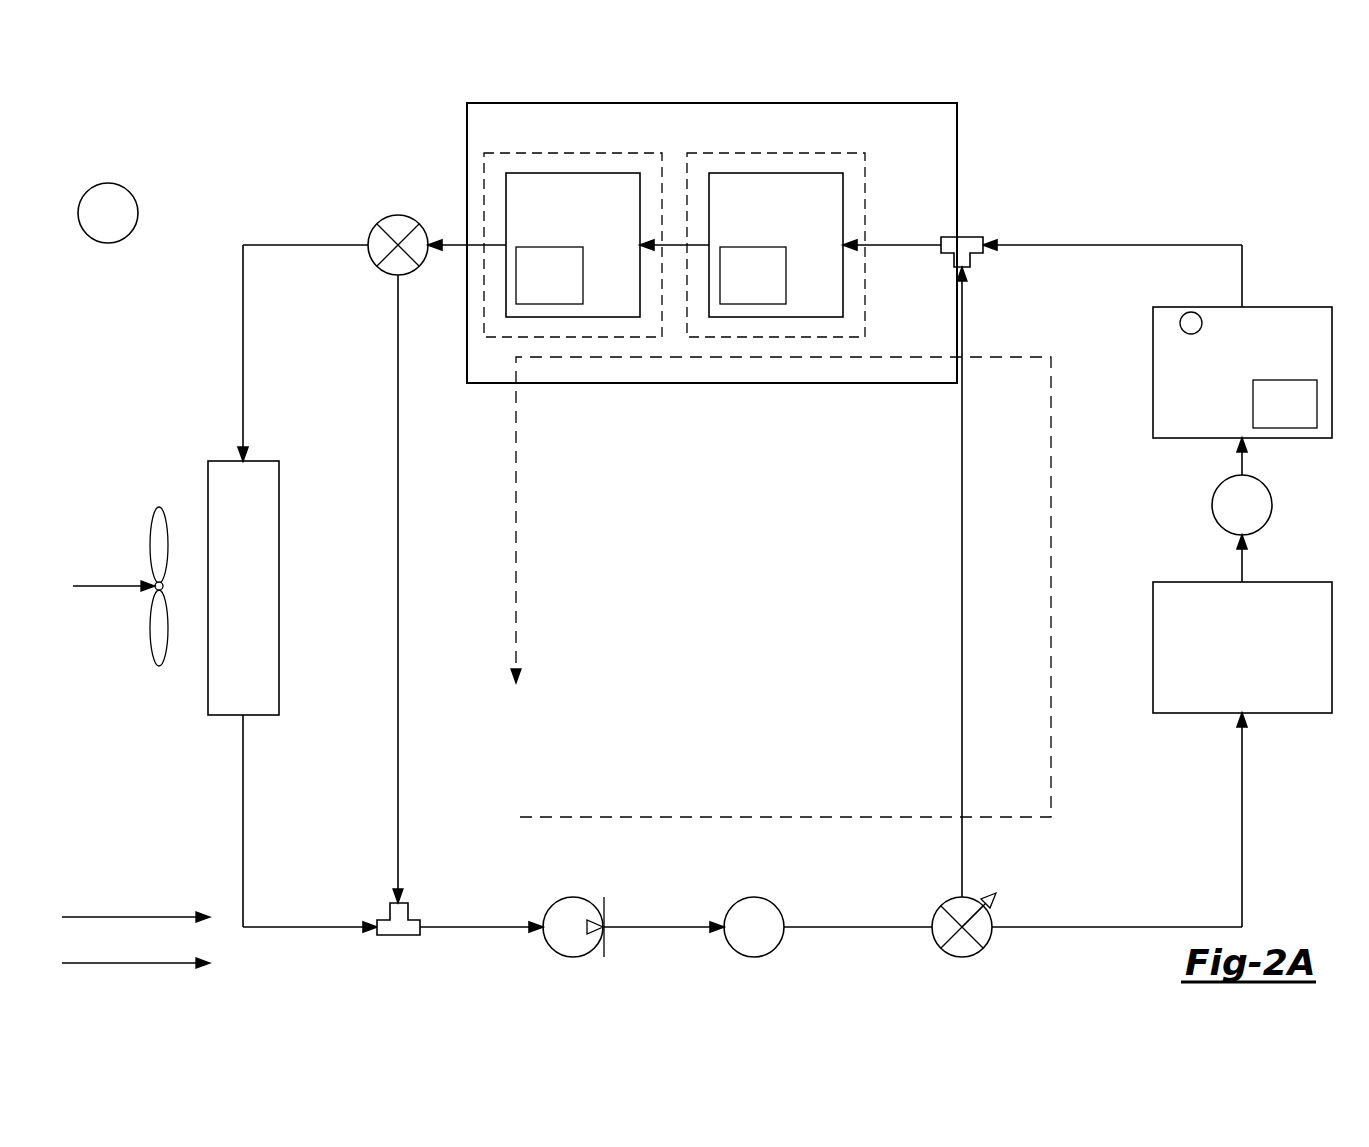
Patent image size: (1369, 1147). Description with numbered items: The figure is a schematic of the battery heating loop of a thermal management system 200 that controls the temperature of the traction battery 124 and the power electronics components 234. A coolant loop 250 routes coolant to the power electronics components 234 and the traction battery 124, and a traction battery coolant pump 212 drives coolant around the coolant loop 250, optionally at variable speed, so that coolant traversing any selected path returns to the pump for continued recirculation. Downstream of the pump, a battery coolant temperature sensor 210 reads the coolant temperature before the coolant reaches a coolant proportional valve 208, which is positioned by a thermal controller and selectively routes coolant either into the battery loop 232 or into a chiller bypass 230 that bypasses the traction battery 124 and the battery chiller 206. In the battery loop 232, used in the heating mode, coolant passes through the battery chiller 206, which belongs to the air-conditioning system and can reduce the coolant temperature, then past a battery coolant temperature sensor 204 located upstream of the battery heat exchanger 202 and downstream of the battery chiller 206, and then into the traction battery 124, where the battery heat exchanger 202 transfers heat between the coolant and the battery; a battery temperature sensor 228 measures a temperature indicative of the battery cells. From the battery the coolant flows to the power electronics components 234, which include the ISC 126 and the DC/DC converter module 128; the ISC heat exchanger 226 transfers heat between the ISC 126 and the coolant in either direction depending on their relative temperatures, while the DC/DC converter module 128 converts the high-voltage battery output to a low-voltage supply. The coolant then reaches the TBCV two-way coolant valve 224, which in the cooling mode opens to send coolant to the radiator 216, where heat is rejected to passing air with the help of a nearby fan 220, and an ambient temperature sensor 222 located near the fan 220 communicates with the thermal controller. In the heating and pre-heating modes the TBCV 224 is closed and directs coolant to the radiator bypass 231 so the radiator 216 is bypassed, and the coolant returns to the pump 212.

The thermal management system 200 is at (1262, 115).
The coolant loop 250 is at (243, 113).
The power electronics components 234 is at (957, 148).
The ISC 126 is at (572, 173).
The ISC heat exchanger 226 is at (516, 278).
The DC/DC converter module 128 is at (800, 173).
The battery temperature sensor 228 is at (786, 260).
The ambient temperature sensor 222 is at (137, 207).
The TBCV two-way coolant valve 224 is at (373, 232).
The radiator 216 is at (279, 502).
The fan 220 is at (157, 510).
The radiator bypass 231 is at (399, 772).
The chiller bypass 230 is at (962, 455).
The battery loop 232 is at (518, 524).
The traction battery 124 is at (1153, 370).
The battery heat exchanger 202 is at (1253, 407).
The battery coolant temperature sensor 204 is at (1268, 489).
The battery chiller 206 is at (1153, 612).
The traction battery coolant pump 212 is at (553, 950).
The battery coolant temperature sensor 210 is at (733, 950).
The coolant proportional valve 208 is at (942, 948).